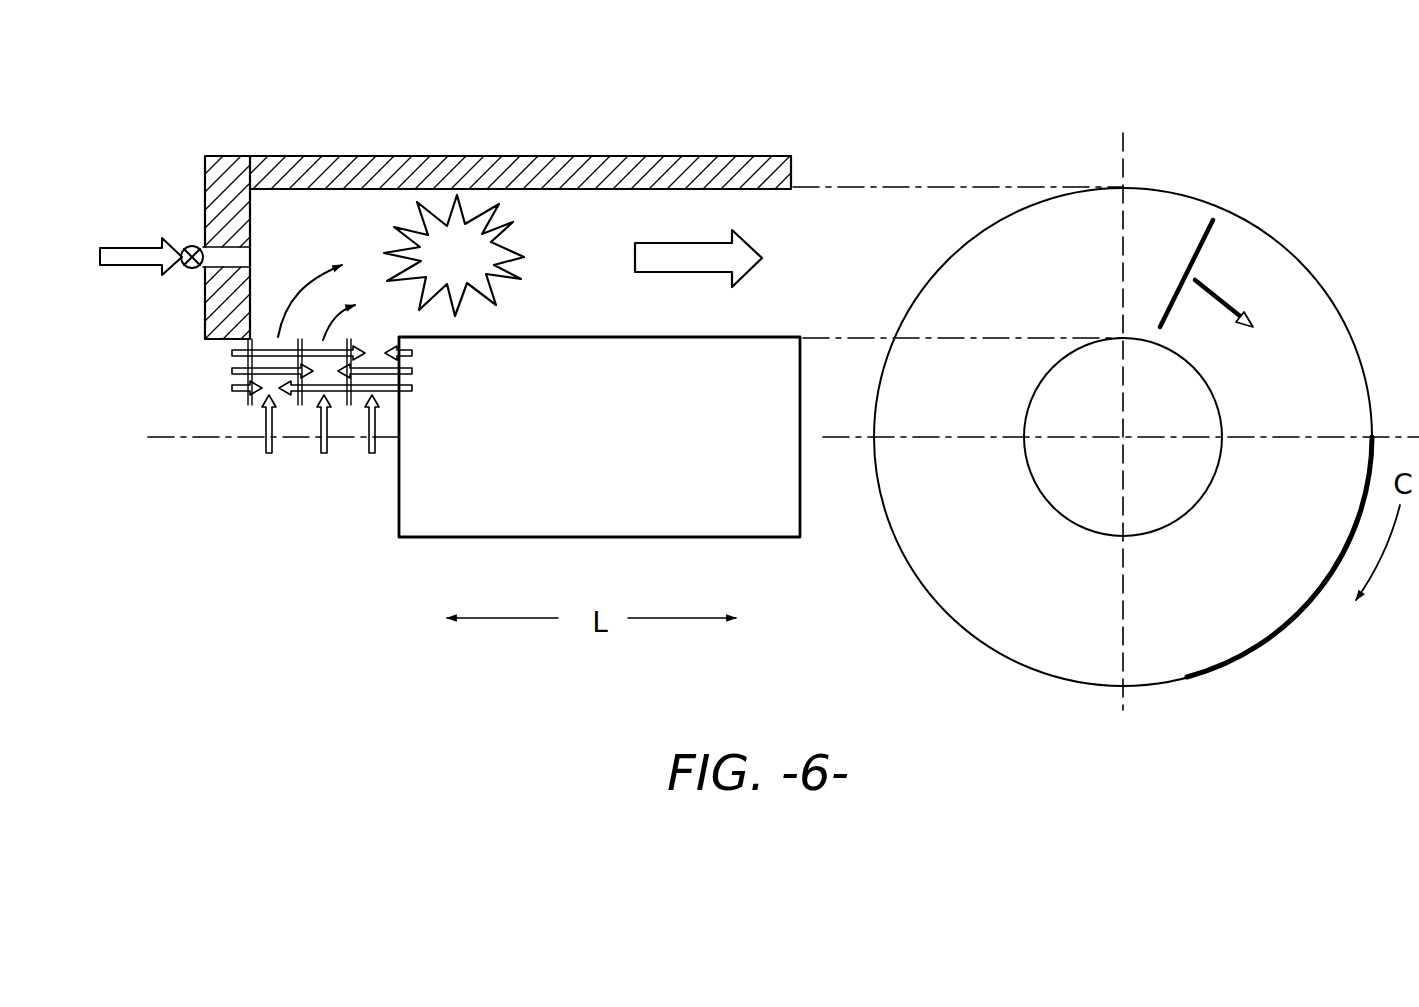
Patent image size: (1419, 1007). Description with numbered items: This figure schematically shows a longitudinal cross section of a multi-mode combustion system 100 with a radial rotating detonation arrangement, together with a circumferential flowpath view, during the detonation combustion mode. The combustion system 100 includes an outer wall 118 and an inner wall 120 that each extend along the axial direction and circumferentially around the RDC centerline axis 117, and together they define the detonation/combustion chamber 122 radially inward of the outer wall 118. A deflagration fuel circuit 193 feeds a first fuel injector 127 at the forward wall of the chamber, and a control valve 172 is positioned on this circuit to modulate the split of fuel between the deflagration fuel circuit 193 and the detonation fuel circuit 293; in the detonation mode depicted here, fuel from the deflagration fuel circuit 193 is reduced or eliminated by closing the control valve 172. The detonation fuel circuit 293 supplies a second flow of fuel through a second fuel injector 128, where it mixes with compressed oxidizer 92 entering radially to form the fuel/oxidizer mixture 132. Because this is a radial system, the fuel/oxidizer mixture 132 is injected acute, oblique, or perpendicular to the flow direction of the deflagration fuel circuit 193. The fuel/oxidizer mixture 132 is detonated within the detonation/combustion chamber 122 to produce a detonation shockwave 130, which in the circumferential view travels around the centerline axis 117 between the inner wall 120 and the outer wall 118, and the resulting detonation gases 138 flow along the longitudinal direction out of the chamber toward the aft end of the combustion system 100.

The combustion system 100 is at (1291, 185).
The RDC centerline axis 117 is at (180, 440).
The outer wall 118 is at (739, 193).
The inner wall 120 is at (774, 332).
The detonation/combustion chamber 122 is at (603, 270).
The first fuel injector 127 is at (266, 235).
The second fuel injector 128 is at (218, 390).
The detonation shockwave 130 is at (480, 270).
The fuel/oxidizer mixture 132 is at (316, 279).
The detonation gases 138 is at (680, 273).
The control valve 172 is at (191, 270).
The deflagration fuel circuit 193 is at (128, 268).
The detonation fuel circuit 293 is at (238, 393).
The compressed oxidizer 92 is at (267, 422).